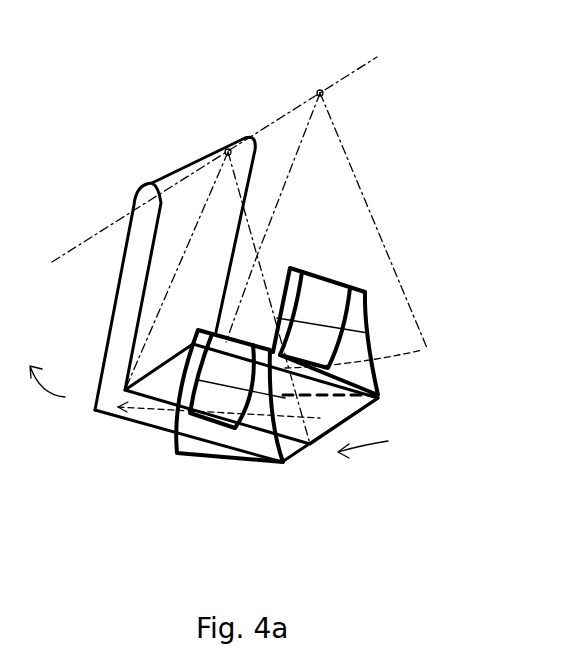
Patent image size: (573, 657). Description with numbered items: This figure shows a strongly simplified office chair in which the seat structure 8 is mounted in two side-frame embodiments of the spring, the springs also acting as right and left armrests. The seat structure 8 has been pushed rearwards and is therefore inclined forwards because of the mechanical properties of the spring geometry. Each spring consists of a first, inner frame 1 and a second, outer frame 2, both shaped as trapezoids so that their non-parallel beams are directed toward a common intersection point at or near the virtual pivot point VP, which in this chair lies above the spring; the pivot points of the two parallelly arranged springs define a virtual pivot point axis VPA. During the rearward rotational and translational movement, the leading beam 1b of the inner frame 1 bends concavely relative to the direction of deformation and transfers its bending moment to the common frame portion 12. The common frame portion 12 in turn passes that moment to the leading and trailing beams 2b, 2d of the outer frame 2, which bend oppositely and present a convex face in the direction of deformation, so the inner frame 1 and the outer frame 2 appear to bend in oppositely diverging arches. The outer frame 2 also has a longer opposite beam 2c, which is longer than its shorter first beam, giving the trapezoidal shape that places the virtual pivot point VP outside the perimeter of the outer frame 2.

The first, inner frame 1 is at (242, 412).
The leading beam of the first, inner frame 1b is at (366, 343).
The second, outer frame 2 is at (173, 440).
The leading beam of the second, outer frame 2b is at (285, 298).
The opposite beam of the second frame 2c is at (217, 457).
The trailing beam of the second, outer frame 2d is at (368, 331).
The seat structure 8 is at (140, 428).
The common frame portion 12 is at (328, 278).
The virtual pivot point VP is at (276, 242).
The virtual pivot point axis VPA is at (251, 148).